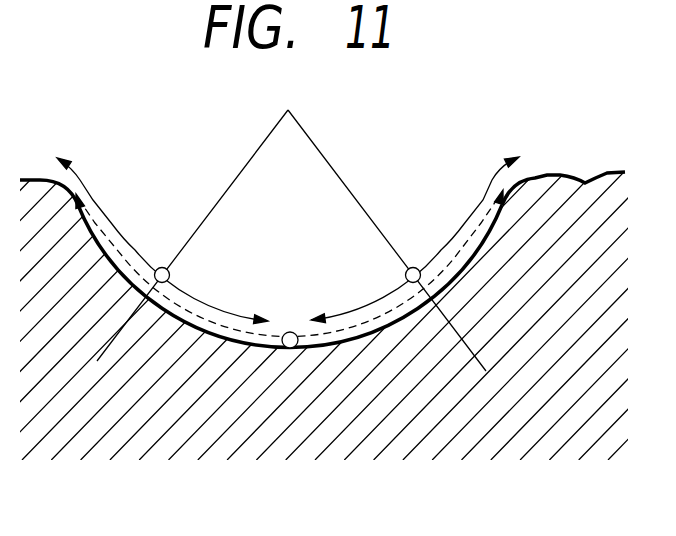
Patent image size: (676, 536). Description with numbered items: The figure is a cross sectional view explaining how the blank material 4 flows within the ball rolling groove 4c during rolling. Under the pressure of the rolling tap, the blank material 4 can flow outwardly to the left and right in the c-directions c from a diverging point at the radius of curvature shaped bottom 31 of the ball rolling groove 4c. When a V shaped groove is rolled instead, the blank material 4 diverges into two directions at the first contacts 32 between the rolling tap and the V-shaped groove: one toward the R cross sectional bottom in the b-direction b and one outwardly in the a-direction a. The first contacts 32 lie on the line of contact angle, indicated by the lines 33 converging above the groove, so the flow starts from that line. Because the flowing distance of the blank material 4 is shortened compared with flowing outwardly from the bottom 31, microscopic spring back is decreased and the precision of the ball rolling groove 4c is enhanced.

The blank material 4 is at (568, 184).
The ball rolling groove 4c is at (268, 346).
The radius of curvature shaped bottom 31 is at (292, 332).
The first contacts 32 is at (160, 267).
The reference line 33 is at (250, 159).
The a-direction a is at (288, 242).
The b-direction b is at (227, 312).
The c-directions c is at (104, 213).